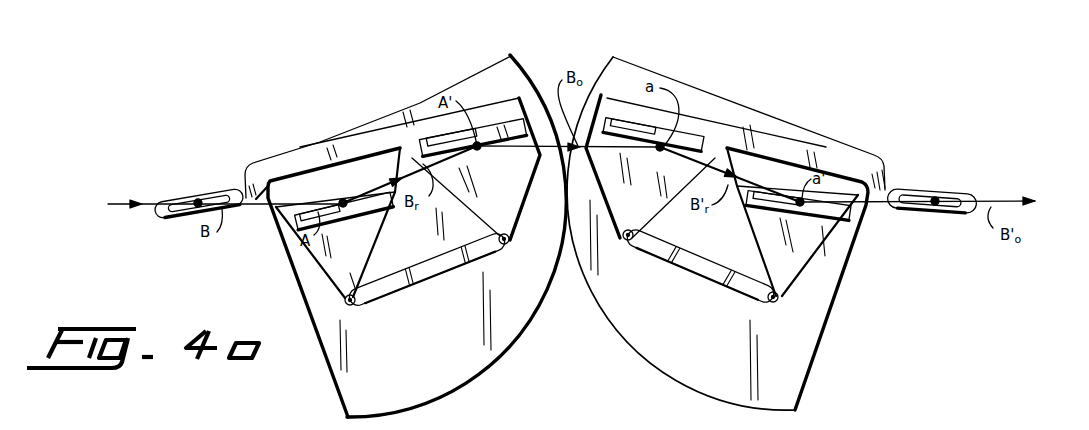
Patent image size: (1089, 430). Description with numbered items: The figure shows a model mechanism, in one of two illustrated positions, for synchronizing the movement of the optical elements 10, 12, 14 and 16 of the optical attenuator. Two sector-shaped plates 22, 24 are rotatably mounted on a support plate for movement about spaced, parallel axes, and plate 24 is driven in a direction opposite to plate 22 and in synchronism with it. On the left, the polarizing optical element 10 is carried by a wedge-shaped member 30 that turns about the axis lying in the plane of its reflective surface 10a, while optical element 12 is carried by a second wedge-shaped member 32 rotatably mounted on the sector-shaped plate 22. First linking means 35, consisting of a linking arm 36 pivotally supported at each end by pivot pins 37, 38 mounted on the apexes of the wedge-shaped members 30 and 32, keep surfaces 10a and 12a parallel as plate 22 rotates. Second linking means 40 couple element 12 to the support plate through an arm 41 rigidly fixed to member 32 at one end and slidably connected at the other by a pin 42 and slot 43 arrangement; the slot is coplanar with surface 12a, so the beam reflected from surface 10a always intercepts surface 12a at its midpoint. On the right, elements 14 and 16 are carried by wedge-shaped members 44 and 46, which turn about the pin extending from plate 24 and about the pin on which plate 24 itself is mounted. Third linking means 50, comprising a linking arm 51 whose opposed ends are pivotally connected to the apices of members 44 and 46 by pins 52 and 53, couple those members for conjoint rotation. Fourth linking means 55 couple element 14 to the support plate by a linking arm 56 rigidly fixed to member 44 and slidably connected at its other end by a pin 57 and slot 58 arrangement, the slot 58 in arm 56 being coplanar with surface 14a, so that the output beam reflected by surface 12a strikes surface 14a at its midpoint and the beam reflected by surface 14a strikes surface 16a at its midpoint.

The polarizing optical element 10 is at (352, 212).
The reflective surface 10a is at (339, 203).
The optical element 12 is at (488, 122).
The reflective surface 12a is at (508, 145).
The optical element 14 is at (636, 130).
The reflective surface 14a is at (684, 148).
The optical element 16 is at (780, 208).
The reflective surface 16a is at (792, 198).
The sector-shaped plate 22 is at (428, 365).
The sector-shaped plate 24 is at (724, 360).
The wedge-shaped member 30 is at (358, 268).
The second wedge-shaped member 32 is at (503, 211).
The first linking means 35 is at (432, 288).
The linking arm 36 is at (440, 263).
The pivot pin 37 is at (358, 304).
The pivot pin 38 is at (506, 244).
The second linking means 40 is at (353, 128).
The arm 41 is at (305, 155).
The pin 42 is at (197, 200).
The slot 43 is at (248, 195).
The wedge-shaped member 44 is at (648, 203).
The wedge-shaped member 46 is at (798, 274).
The third linking means 50 is at (700, 289).
The linking arm 51 is at (744, 290).
The pin 52 is at (624, 238).
The pin 53 is at (779, 297).
The fourth linking means 55 is at (848, 140).
The linking arm 56 is at (872, 160).
The pin 57 is at (942, 194).
The slot 58 is at (910, 191).